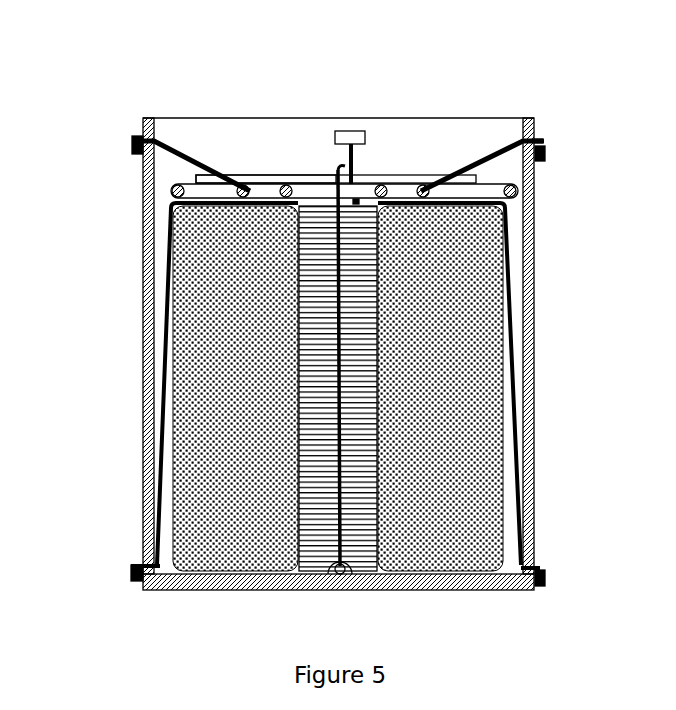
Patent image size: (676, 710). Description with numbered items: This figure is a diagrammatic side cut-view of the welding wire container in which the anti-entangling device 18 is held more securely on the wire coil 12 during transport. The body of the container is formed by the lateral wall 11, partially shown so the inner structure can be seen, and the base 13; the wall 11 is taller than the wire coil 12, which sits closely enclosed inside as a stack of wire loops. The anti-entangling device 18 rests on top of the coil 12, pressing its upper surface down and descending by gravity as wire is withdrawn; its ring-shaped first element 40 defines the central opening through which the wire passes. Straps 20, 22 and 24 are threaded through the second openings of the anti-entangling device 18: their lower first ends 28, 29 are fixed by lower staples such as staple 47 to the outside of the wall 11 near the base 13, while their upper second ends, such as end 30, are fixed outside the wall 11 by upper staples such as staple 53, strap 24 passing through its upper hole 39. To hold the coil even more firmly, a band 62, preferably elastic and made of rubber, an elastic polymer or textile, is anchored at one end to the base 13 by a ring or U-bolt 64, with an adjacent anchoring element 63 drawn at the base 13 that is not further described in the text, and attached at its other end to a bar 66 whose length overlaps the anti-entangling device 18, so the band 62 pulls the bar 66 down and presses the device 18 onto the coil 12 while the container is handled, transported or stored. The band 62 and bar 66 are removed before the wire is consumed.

The lateral wall 11 is at (527, 228).
The wire coil 12 is at (478, 303).
The base 13 is at (490, 583).
The anti-entangling device 18 is at (166, 181).
The strap 20 is at (463, 155).
The strap 22 is at (210, 160).
The strap 24 is at (349, 157).
The lower first end of strap 28 is at (533, 558).
The lower first end of strap 29 is at (130, 557).
The upper second end of strap 30 is at (536, 131).
The upper hole 39 is at (345, 123).
The ring-shaped first element 40 is at (375, 172).
The lower staple 47 is at (538, 570).
The upper staple 53 is at (537, 148).
The band 62 is at (328, 258).
The wire loop 63 is at (345, 570).
The ring or U-bolt 64 is at (322, 570).
The bar 66 is at (287, 167).